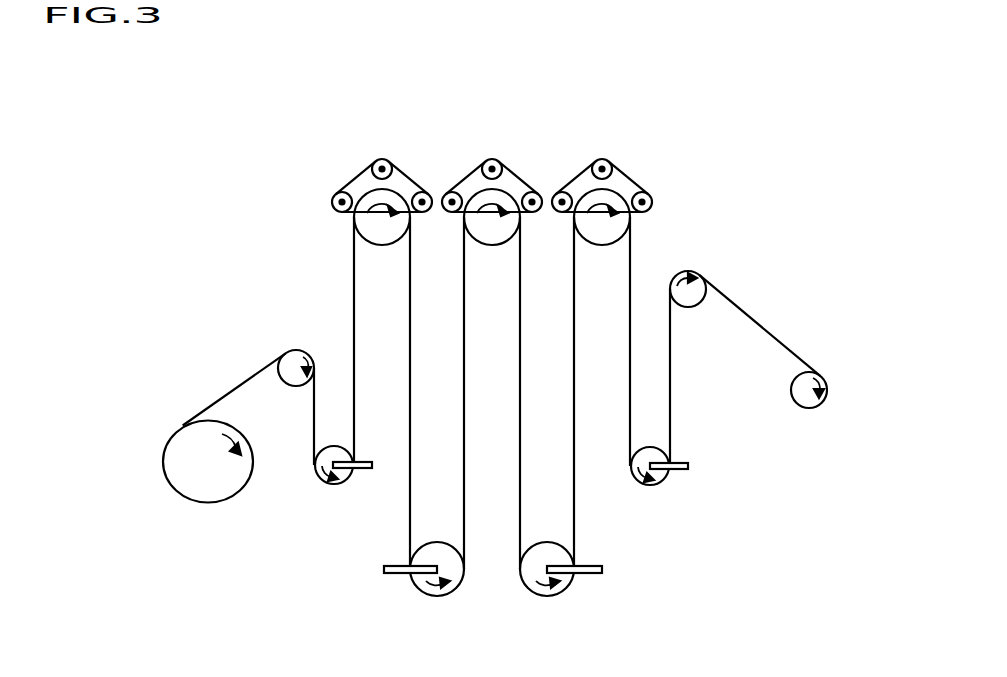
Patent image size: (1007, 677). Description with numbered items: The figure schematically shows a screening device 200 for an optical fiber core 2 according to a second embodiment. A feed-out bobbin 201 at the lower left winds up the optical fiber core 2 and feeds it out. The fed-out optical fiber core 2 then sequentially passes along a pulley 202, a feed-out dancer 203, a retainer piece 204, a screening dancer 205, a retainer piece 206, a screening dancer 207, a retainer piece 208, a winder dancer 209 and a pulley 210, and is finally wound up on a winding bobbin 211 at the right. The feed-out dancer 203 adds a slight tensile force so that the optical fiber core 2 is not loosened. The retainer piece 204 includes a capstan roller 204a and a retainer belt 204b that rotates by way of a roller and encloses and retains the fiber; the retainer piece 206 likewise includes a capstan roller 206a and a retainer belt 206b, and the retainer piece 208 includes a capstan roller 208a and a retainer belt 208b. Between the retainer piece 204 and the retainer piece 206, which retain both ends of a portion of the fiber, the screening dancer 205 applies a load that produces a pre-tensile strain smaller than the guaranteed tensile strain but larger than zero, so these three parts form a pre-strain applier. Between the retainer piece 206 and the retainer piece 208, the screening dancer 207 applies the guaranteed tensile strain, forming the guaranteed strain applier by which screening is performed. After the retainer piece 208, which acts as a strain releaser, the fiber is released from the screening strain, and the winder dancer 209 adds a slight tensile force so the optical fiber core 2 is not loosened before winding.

The optical fiber core 2 is at (242, 380).
The screening device 200 is at (788, 84).
The feed-out bobbin 201 is at (205, 503).
The pulley 202 is at (297, 350).
The feed-out dancer 203 is at (333, 484).
The retainer piece 204 is at (367, 159).
The capstan roller 204a is at (383, 245).
The retainer belt 204b is at (396, 171).
The screening dancer 205 is at (433, 596).
The retainer piece 206 is at (422, 175).
The capstan roller 206a is at (493, 245).
The retainer belt 206b is at (507, 171).
The screening dancer 207 is at (543, 596).
The retainer piece 208 is at (636, 154).
The capstan roller 208a is at (603, 245).
The retainer belt 208b is at (617, 171).
The winder dancer 209 is at (647, 485).
The pulley 210 is at (697, 275).
The winding bobbin 211 is at (812, 408).